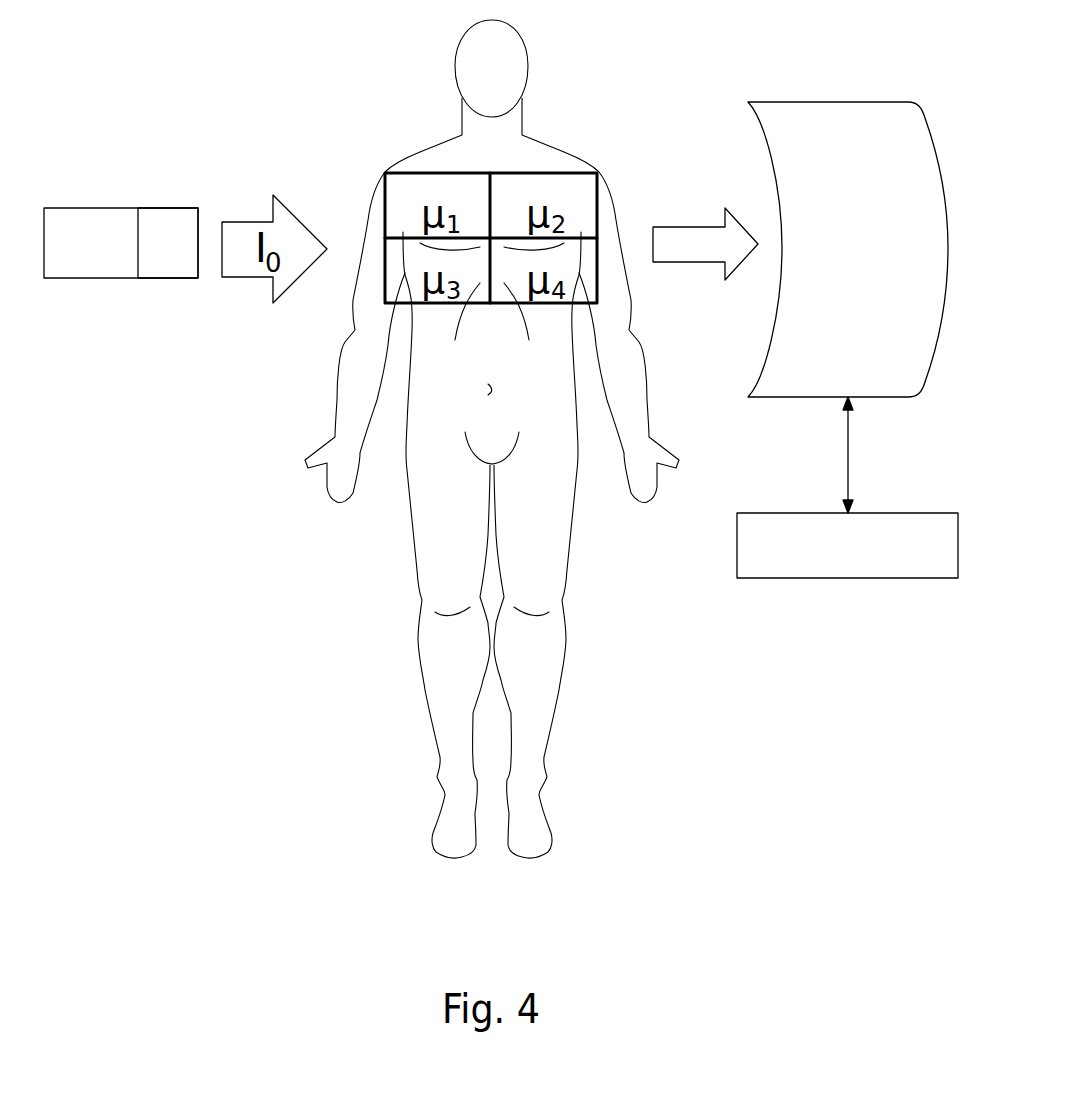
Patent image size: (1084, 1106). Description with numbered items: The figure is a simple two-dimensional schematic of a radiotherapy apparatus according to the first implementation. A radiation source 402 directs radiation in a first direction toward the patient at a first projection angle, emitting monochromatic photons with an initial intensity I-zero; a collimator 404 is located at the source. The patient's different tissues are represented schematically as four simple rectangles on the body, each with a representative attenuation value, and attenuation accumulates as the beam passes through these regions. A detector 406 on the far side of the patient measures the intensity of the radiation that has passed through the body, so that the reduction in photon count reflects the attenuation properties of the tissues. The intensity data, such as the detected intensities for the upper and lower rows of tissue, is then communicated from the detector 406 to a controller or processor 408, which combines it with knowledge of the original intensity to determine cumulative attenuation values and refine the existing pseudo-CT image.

The radiation source 402 is at (82, 205).
The collimator 404 is at (167, 282).
The detector 406 is at (858, 100).
The controller, or processor 408 is at (852, 580).